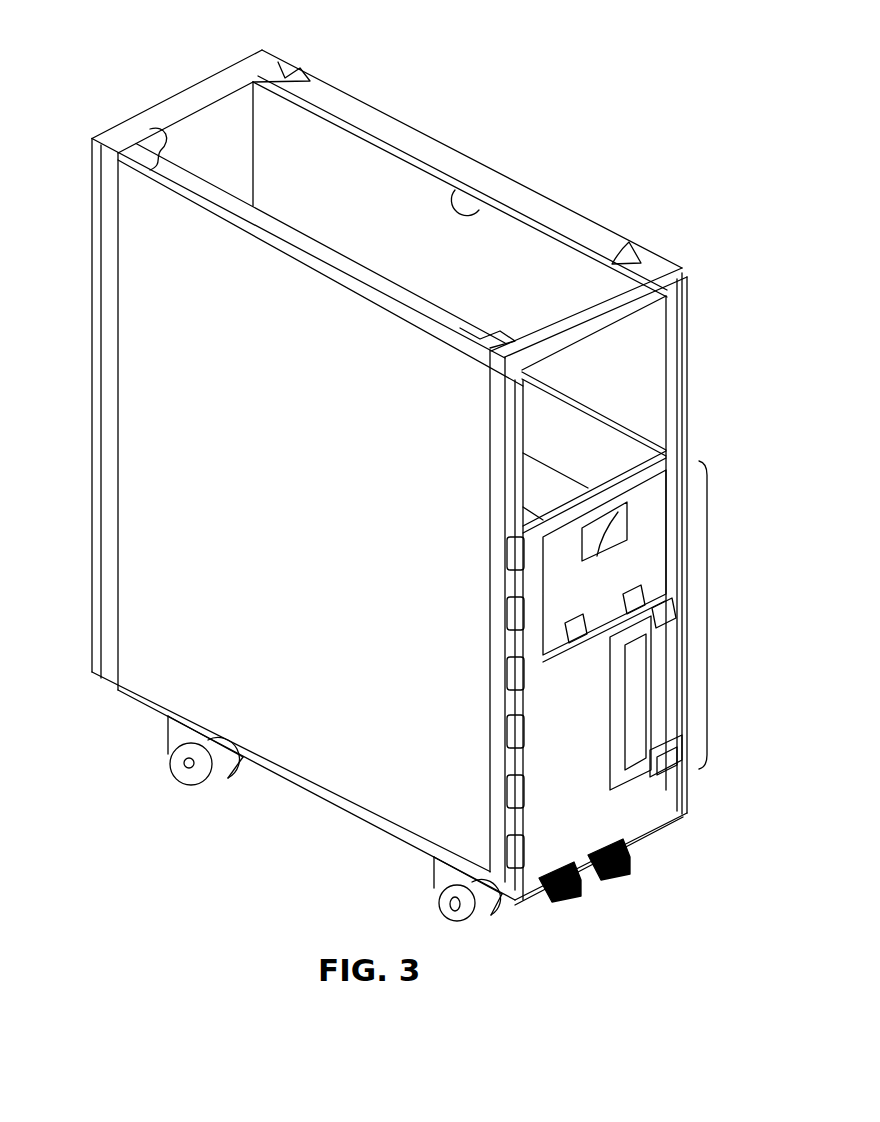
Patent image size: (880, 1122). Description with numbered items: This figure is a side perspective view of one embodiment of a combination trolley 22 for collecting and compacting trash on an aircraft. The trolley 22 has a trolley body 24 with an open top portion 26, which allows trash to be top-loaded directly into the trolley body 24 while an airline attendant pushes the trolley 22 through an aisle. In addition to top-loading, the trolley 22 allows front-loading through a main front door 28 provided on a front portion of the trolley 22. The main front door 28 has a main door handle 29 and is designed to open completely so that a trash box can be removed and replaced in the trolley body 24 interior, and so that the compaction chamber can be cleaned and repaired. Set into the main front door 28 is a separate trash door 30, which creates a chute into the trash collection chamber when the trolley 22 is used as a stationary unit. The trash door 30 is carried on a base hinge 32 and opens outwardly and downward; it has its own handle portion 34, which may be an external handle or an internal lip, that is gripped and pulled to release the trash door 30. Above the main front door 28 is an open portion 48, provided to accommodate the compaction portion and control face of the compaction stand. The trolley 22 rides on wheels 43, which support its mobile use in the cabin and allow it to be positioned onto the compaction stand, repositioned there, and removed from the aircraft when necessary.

The trolley 22 is at (412, 485).
The trolley body 24 is at (172, 463).
The open top portion 26 is at (353, 183).
The main front door 28 is at (656, 613).
The main door handle 29 is at (640, 737).
The trash door 30 is at (666, 549).
The base hinge 32 is at (687, 592).
The handle portion 34 is at (628, 503).
The wheels 43 is at (184, 763).
The open portion 48 is at (641, 352).